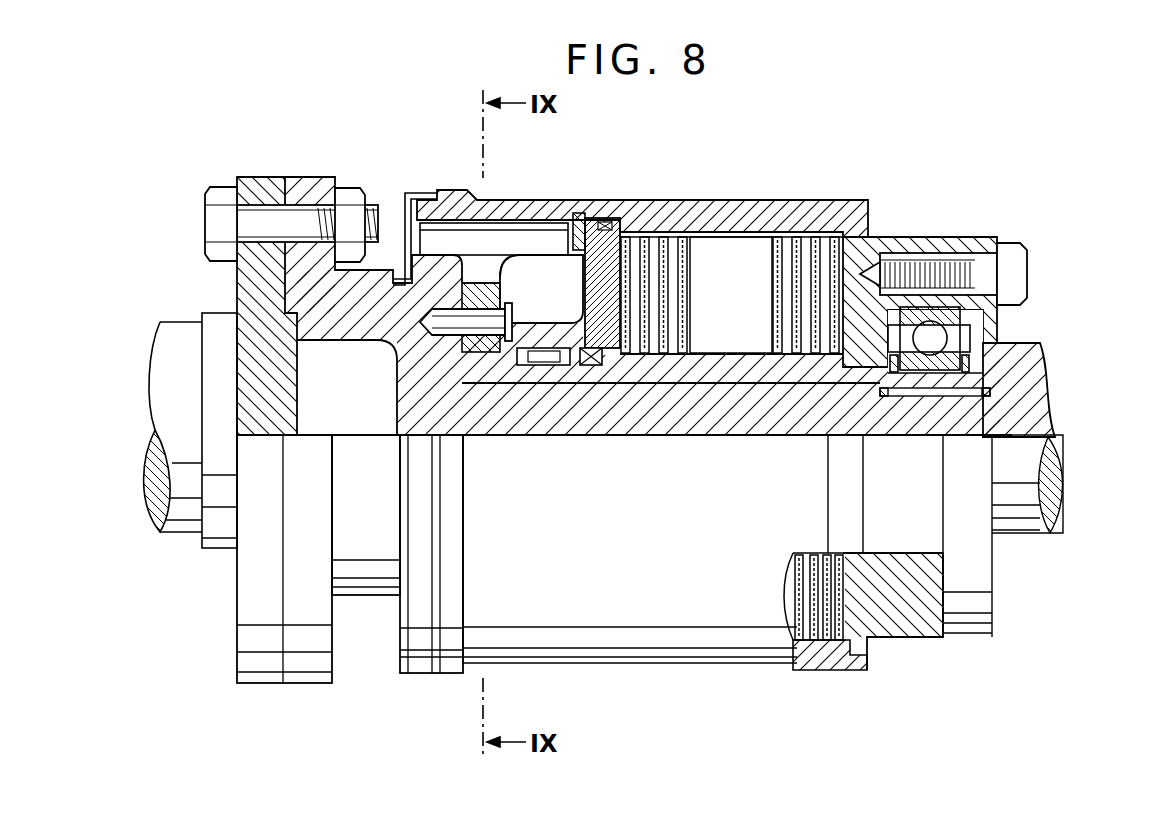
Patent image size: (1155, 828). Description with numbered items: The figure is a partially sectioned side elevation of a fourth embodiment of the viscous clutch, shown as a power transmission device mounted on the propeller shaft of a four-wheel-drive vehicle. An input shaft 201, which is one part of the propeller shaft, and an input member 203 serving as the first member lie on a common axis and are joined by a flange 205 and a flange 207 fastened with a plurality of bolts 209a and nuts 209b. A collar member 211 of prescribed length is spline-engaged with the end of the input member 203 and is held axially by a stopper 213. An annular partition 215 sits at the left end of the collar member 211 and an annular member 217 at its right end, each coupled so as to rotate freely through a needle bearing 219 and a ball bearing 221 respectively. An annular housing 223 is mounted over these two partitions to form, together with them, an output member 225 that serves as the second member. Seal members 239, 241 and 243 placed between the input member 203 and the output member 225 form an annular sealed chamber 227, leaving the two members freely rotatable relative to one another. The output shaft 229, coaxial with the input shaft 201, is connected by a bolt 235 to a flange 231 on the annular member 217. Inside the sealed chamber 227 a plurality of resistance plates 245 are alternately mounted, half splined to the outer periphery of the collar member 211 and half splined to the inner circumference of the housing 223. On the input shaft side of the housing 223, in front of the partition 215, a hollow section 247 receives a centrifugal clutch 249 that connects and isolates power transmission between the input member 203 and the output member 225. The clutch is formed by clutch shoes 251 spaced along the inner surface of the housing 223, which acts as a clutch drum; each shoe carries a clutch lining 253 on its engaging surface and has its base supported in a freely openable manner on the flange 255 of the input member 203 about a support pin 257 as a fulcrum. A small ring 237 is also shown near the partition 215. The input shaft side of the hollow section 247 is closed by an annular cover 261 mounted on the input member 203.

The input shaft 201 is at (163, 522).
The input member 203 is at (546, 424).
The flange 205 is at (270, 190).
The flange 207 is at (312, 190).
The bolt 209a is at (217, 215).
The nut 209b is at (355, 200).
The collar member 211 is at (717, 376).
The stopper 213 is at (970, 364).
The annular partition 215 is at (592, 237).
The annular member 217 is at (907, 240).
The needle bearing 219 is at (548, 364).
The ball bearing 221 is at (962, 318).
The annular housing 223 is at (630, 222).
The output member 225 is at (820, 181).
The annular sealed chamber 227 is at (740, 257).
The output shaft 229 is at (1060, 400).
The flange 231 is at (965, 243).
The bolt 235 is at (1030, 272).
The ring 237 is at (578, 227).
The seal member 239 is at (682, 206).
The seal member 241 is at (590, 366).
The seal member 243 is at (789, 436).
The resistance plates 245 is at (688, 290).
The hollow section 247 is at (523, 265).
The centrifugal clutch 249 is at (478, 228).
The clutch shoe 251 is at (488, 270).
The clutch lining 253 is at (538, 212).
The flange 255 is at (462, 300).
The support pin 257 is at (487, 340).
The annular cover 261 is at (410, 215).